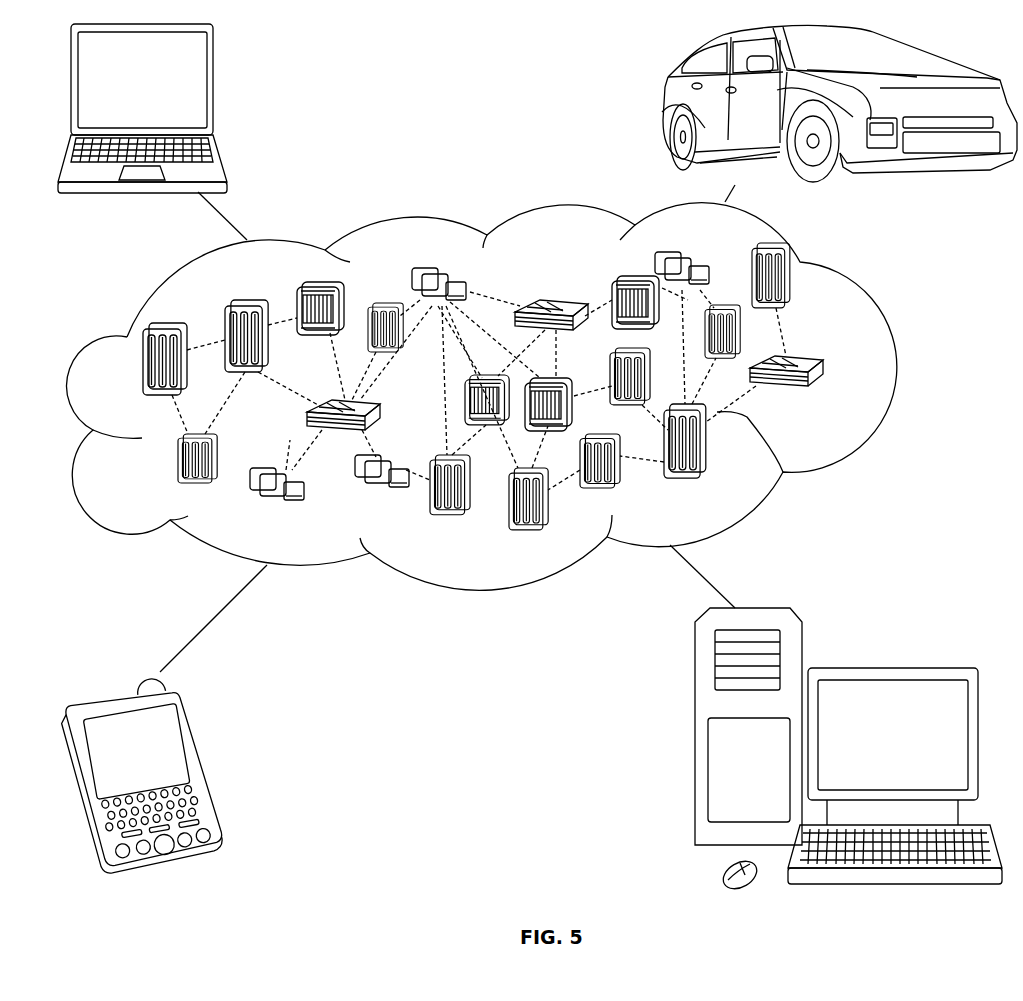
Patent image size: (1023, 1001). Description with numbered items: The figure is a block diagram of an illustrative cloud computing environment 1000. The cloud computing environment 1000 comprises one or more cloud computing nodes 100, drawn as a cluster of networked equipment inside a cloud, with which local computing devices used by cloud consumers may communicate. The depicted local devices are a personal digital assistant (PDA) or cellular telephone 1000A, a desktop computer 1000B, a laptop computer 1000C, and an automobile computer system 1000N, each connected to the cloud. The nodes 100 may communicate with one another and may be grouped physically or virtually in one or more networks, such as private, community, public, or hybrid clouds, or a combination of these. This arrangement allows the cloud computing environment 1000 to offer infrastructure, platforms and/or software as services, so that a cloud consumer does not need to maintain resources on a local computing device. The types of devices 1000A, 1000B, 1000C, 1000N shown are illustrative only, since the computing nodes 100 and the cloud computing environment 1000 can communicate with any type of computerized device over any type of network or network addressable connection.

The cloud computing environment 1000 is at (890, 374).
The cloud computing nodes 100 is at (830, 400).
The personal digital assistant (PDA) or cellular telephone 1000A is at (200, 768).
The desktop computer 1000B is at (890, 667).
The laptop computer 1000C is at (214, 88).
The automobile computer system 1000N is at (658, 103).